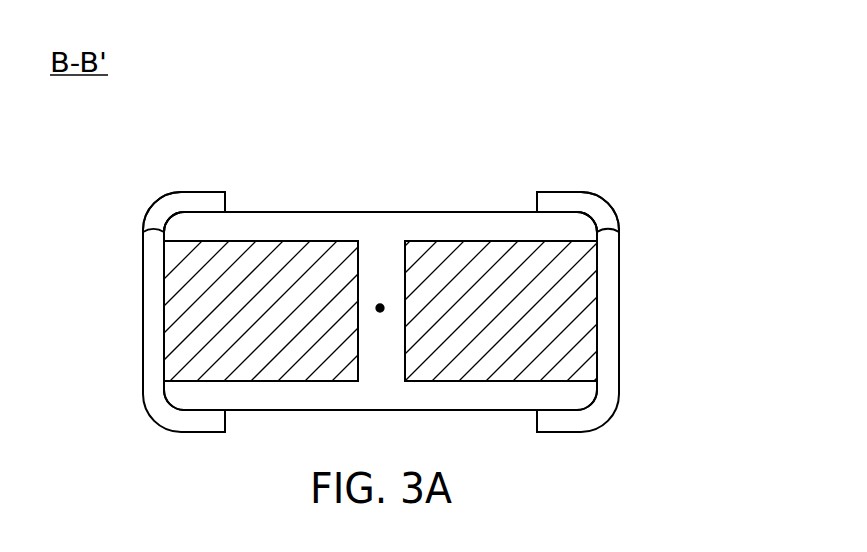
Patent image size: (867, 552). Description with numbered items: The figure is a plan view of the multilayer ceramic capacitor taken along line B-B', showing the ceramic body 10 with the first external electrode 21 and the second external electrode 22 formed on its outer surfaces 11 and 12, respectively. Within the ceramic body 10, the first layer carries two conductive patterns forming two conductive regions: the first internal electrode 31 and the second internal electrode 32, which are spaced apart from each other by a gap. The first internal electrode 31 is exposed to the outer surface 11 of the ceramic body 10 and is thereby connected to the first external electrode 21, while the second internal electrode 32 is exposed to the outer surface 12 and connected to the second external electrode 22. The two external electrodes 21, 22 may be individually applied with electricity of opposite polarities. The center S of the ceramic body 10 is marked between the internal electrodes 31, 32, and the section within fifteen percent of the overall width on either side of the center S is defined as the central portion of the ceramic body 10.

The ceramic body 10 is at (278, 225).
The outer surface 11 is at (163, 344).
The outer surface 12 is at (598, 336).
The first external electrode 21 is at (192, 200).
The second external electrode 22 is at (565, 200).
The first internal electrode 31 is at (325, 242).
The second internal electrode 32 is at (428, 241).
The center S is at (380, 304).